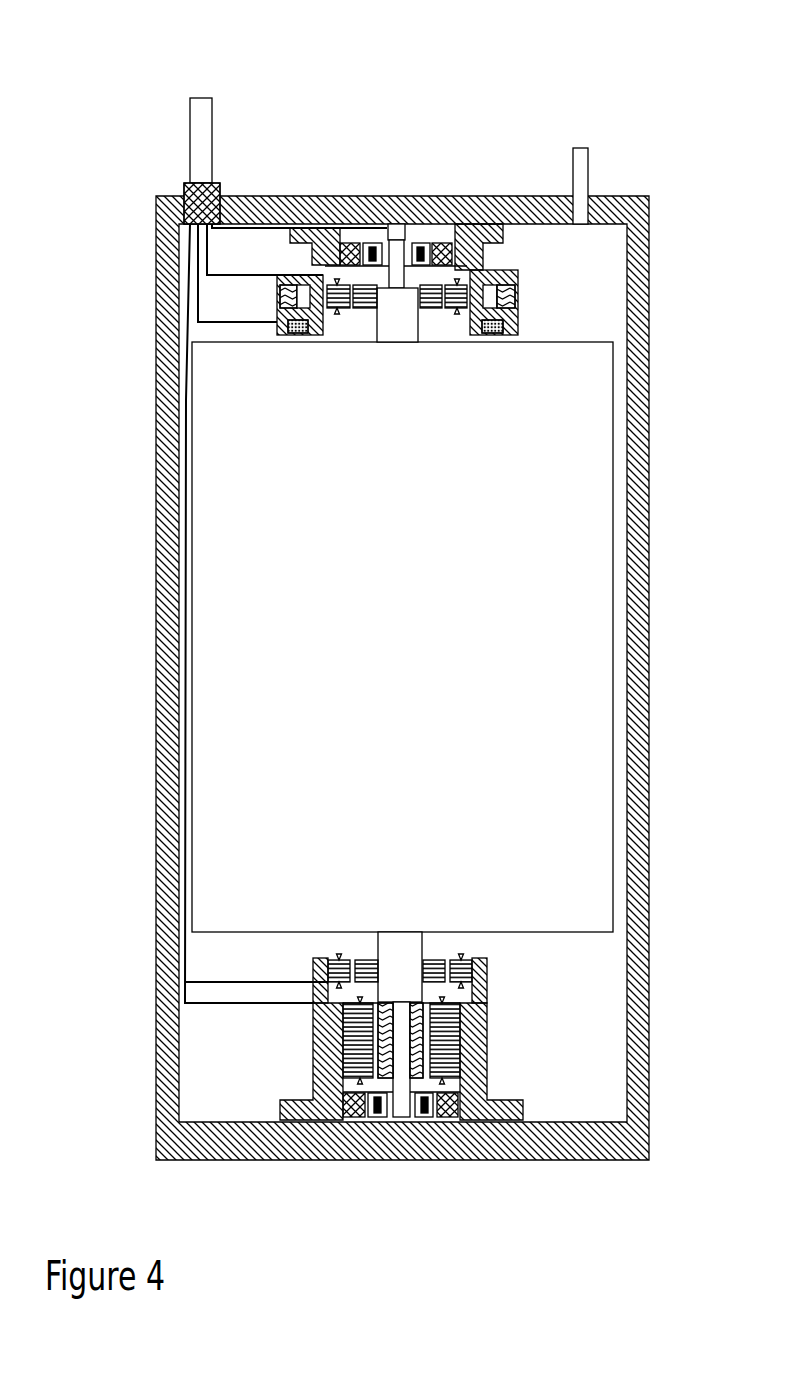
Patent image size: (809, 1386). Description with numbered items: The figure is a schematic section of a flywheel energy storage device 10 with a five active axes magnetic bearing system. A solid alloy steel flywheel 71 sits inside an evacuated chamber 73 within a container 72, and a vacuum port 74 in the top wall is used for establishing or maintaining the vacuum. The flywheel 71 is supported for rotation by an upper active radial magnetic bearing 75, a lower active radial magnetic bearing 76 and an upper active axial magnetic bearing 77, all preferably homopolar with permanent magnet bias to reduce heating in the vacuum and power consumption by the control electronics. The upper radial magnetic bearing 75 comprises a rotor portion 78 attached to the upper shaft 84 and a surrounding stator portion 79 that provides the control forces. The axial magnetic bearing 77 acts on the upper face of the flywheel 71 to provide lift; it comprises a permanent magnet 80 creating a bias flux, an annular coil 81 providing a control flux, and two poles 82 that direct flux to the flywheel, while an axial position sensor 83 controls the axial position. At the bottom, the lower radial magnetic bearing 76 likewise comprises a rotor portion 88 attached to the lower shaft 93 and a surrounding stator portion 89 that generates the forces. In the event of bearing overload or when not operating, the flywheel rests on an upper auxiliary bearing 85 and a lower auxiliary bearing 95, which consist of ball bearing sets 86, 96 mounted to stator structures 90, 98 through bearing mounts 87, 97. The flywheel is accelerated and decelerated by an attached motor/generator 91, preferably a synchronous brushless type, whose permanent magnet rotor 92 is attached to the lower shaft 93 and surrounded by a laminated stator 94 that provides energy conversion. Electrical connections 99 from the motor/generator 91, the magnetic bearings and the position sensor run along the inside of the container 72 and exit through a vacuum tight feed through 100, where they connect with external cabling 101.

The electrochemical cell / battery 10 is at (100, 42).
The flywheel 71 is at (613, 570).
The container 72 is at (649, 700).
The evacuated chamber 73 is at (612, 983).
The vacuum port 74 is at (588, 160).
The upper active radial magnetic bearing 75 is at (443, 316).
The lower active radial magnetic bearing 76 is at (443, 950).
The upper active axial magnetic bearing 77 is at (522, 268).
The rotor portion 78 is at (357, 336).
The stator portion 79 is at (343, 335).
The permanent magnet 80 is at (277, 298).
The annular coil 81 is at (300, 336).
The poles 82 is at (512, 338).
The axial position sensor 83 is at (407, 224).
The upper shaft 84 is at (424, 343).
The upper auxiliary bearing 85 is at (434, 230).
The ball bearing set 86 is at (373, 243).
The bearing mount 87 is at (343, 243).
The rotor portion 88 is at (363, 958).
The stator portion 89 is at (333, 958).
The stator structure 90 is at (503, 233).
The motor/generator 91 is at (496, 1038).
The permanent magnet rotor 92 is at (403, 958).
The lower shaft 93 is at (402, 1116).
The laminated stator 94 is at (347, 1086).
The lower auxiliary bearing 95 is at (441, 1120).
The ball bearing set 96 is at (373, 1118).
The bearing mount 97 is at (355, 1118).
The stator structure 98 is at (488, 1000).
The electrical connections 99 is at (268, 1004).
The vacuum tight feed through 100 is at (184, 185).
The external cabling 101 is at (212, 117).